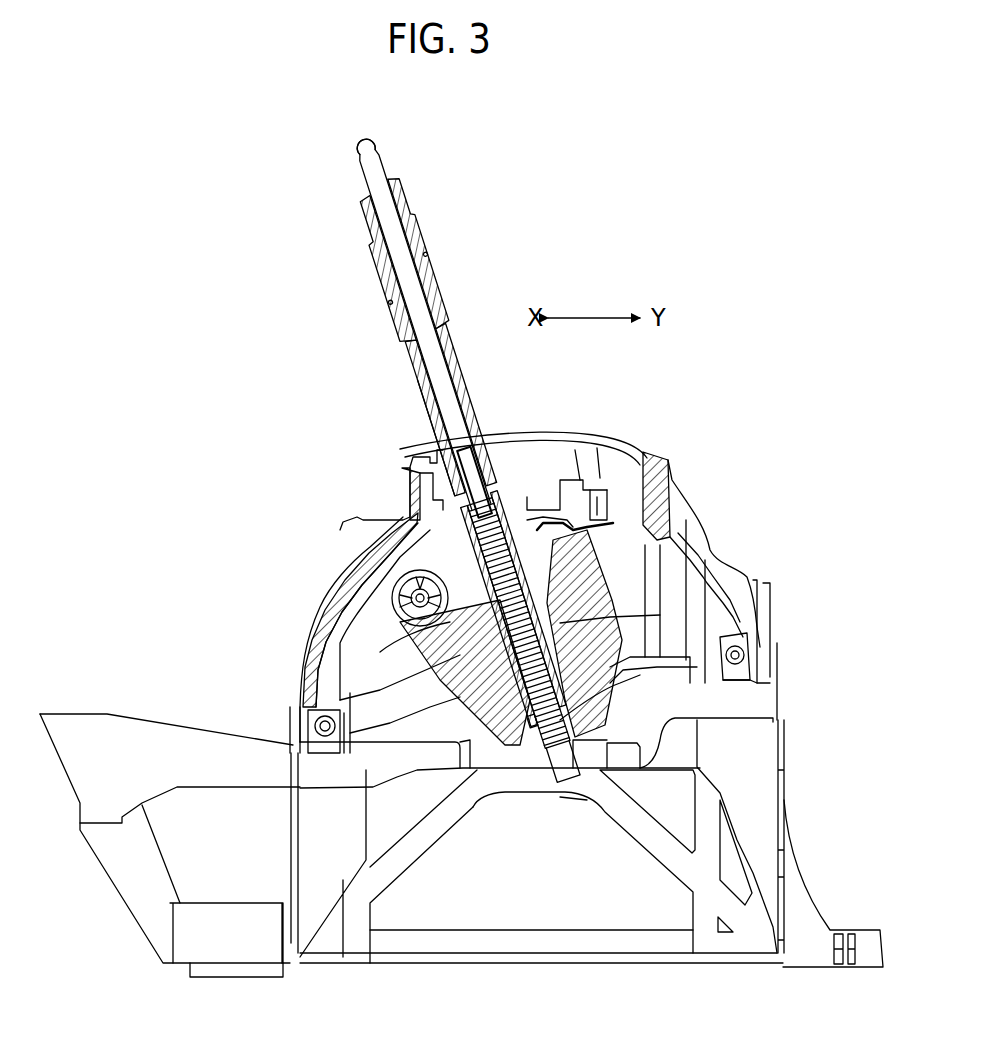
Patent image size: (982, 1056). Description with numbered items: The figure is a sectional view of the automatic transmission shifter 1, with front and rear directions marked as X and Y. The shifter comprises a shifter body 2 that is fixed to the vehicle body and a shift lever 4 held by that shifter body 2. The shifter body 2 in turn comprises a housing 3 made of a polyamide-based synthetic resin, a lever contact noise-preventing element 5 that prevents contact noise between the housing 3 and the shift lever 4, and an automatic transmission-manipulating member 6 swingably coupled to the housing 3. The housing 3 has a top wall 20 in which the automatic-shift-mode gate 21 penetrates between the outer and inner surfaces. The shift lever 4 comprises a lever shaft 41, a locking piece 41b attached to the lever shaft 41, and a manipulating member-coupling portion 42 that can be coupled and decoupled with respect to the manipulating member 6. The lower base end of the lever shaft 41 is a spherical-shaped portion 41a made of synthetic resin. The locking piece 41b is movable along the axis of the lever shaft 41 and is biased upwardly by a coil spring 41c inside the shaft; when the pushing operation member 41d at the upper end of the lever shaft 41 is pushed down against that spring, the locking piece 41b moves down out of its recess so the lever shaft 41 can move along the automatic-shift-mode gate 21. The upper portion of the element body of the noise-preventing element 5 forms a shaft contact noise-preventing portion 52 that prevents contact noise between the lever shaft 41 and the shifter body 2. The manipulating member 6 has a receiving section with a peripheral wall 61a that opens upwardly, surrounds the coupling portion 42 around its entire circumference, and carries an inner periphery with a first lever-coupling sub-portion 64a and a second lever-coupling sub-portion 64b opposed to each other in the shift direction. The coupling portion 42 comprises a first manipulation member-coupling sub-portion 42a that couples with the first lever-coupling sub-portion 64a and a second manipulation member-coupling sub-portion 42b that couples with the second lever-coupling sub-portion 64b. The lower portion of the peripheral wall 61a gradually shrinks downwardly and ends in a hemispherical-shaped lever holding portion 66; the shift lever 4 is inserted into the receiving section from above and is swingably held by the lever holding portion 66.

The automatic transmission shifter 1 is at (790, 532).
The shifter body 2 is at (780, 694).
The housing 3 is at (778, 656).
The shift lever 4 is at (457, 368).
The lever contact noise-preventing element 5 is at (643, 457).
The automatic transmission-manipulating member 6 is at (588, 575).
The top wall 20 is at (653, 458).
The automatic-shift-mode gate 21 is at (565, 443).
The lever shaft 41 is at (438, 399).
The spherical-shaped portion 41a is at (505, 715).
The locking piece 41b is at (480, 442).
The coil spring 41c is at (560, 623).
The pushing operation member 41d is at (380, 150).
The manipulating member-coupling portion 42 is at (304, 623).
The first manipulation member-coupling sub-portion 42a is at (440, 580).
The second manipulation member-coupling sub-portion 42b is at (450, 620).
The shaft contact noise-preventing portion 52 is at (430, 452).
The peripheral wall 61a is at (300, 716).
The first lever-coupling sub-portion 64a is at (443, 573).
The second lever-coupling sub-portion 64b is at (605, 487).
The lever holding portion 66 is at (522, 765).